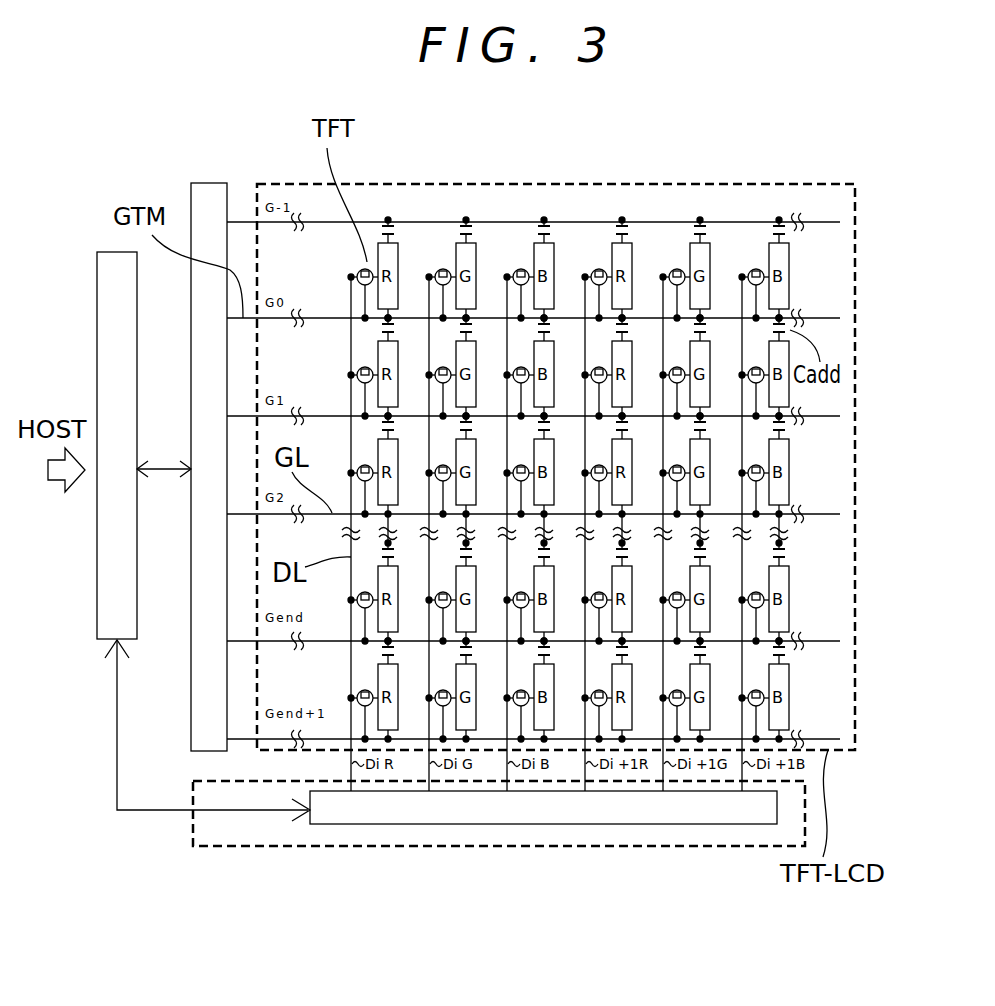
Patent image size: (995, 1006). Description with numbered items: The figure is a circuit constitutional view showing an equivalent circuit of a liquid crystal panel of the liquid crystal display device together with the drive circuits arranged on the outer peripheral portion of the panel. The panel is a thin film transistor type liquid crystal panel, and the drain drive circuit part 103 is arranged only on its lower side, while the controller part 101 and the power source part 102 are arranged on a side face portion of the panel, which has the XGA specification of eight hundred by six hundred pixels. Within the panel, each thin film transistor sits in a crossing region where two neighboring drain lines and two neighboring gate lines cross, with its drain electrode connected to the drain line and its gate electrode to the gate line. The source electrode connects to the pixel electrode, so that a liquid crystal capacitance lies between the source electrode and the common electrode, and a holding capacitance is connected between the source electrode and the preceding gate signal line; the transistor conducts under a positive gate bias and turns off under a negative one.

The controller part 101 is at (97, 570).
The power source part 102 is at (191, 698).
The drain drive circuit part 103 is at (333, 849).